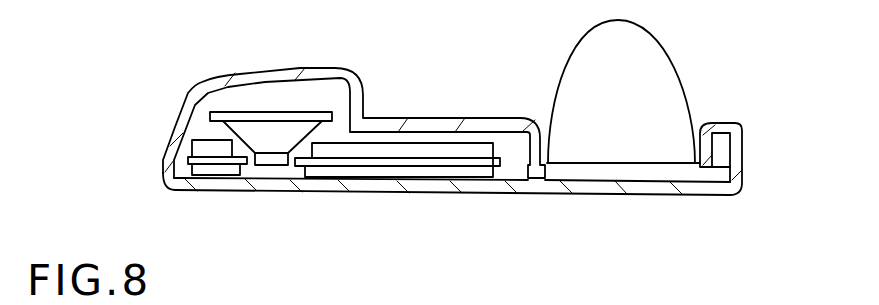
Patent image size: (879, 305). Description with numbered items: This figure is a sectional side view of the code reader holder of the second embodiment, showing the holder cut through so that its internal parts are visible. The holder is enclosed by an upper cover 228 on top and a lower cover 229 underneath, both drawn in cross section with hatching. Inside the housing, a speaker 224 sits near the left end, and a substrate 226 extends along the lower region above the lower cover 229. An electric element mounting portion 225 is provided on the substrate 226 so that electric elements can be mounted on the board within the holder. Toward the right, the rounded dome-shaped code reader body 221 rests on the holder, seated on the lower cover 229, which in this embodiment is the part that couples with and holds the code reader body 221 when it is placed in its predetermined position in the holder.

The code reader body 221 is at (580, 52).
The speaker 224 is at (279, 112).
The electric element mounting portion 225 is at (225, 168).
The substrate 226 is at (240, 173).
The upper cover 228 is at (455, 129).
The lower cover 229 is at (534, 196).